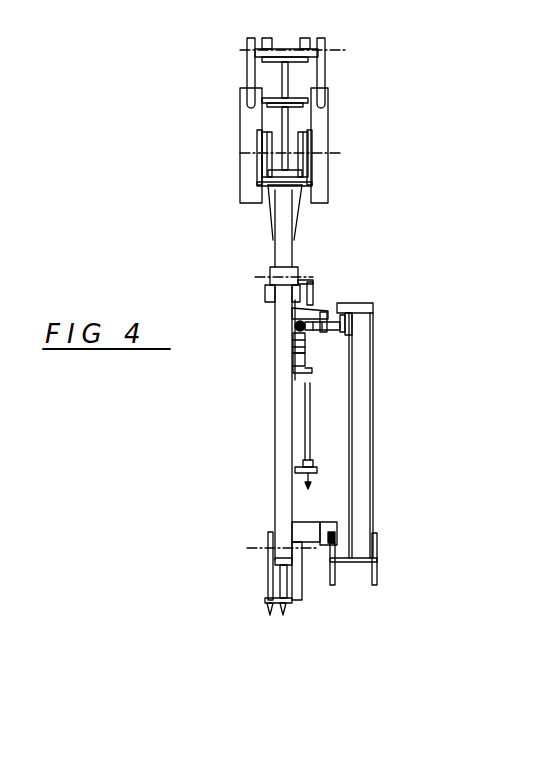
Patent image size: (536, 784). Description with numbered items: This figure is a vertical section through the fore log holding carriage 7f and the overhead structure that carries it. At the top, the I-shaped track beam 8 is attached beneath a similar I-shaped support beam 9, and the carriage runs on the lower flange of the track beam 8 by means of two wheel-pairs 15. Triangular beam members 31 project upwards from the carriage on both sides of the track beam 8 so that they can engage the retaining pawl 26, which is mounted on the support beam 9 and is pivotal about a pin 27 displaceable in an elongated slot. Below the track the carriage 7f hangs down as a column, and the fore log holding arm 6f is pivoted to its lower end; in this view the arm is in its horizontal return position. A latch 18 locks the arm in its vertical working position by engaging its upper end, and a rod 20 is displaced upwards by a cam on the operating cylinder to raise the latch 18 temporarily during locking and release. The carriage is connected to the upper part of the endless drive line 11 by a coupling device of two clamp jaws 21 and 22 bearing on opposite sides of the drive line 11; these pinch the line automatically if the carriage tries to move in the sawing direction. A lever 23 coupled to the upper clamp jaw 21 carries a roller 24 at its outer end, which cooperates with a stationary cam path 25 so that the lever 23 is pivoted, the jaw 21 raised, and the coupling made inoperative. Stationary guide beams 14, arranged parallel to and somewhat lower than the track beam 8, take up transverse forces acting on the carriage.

The pin 27 is at (300, 26).
The retaining pawl 26 is at (252, 73).
The support beam 9 is at (287, 80).
The track beam 8 is at (285, 108).
The triangular beam members 31 is at (250, 143).
The wheel-pairs 15 is at (298, 160).
The fore log holding carriage 7f is at (283, 330).
The latch 18 is at (298, 272).
The lever 23 is at (333, 325).
The upper clamp jaw 21 is at (305, 340).
The lower clamp jaw 22 is at (305, 360).
The drive line 11 is at (293, 352).
The rod 20 is at (307, 425).
The stationary cam path 25 is at (362, 310).
The roller 24 is at (352, 337).
The guide beams 14 is at (340, 560).
The fore log holding arm 6f is at (273, 600).